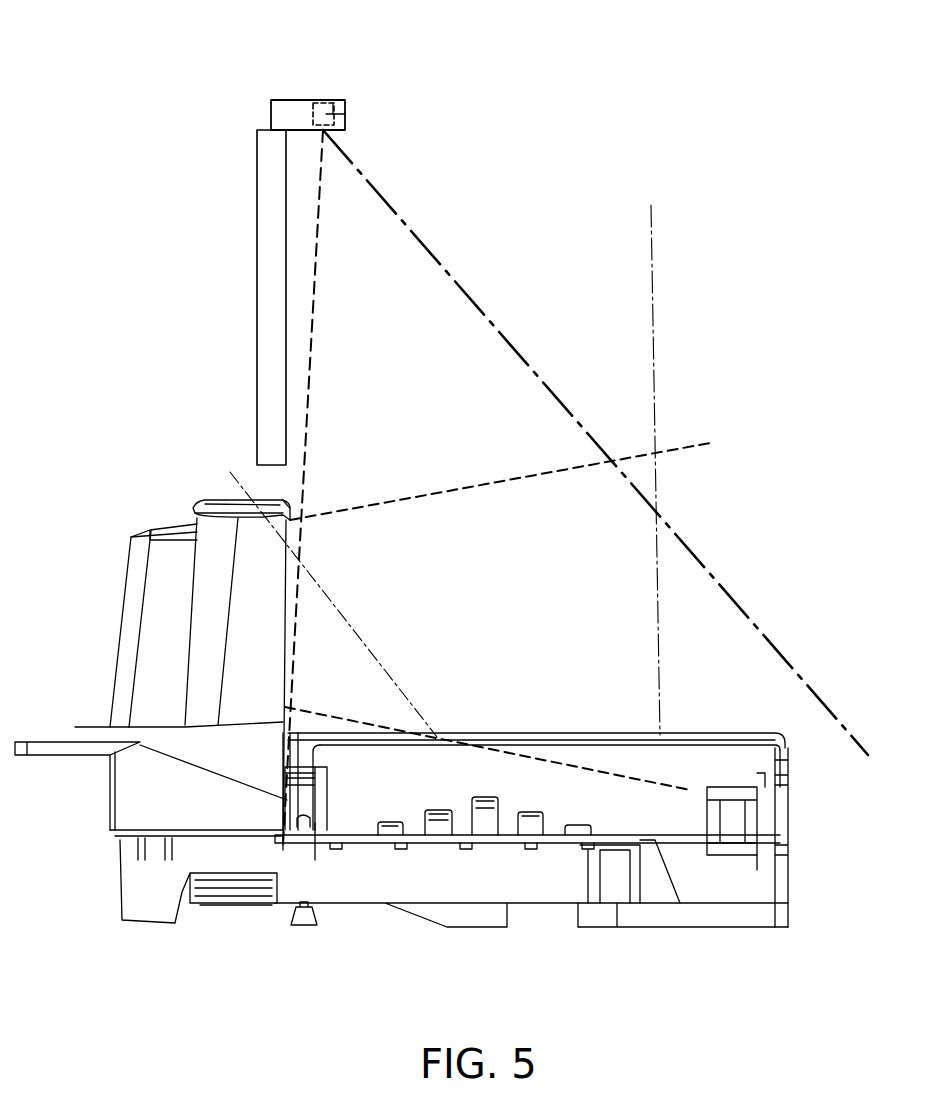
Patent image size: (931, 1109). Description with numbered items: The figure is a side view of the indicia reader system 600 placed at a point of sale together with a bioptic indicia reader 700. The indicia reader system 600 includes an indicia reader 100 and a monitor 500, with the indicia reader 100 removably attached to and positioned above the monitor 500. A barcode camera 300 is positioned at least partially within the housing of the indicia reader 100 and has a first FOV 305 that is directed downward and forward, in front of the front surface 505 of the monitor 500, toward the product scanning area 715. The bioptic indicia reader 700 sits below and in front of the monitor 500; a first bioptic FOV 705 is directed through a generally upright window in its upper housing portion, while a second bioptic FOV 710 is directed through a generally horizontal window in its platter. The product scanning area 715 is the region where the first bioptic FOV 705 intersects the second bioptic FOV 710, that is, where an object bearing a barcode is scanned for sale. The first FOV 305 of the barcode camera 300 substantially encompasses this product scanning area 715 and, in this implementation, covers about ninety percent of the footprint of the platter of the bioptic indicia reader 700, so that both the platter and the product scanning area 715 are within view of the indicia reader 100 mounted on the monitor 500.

The indicia reader system 600 is at (172, 48).
The indicia reader 100 is at (304, 90).
The barcode camera 300 is at (333, 117).
The first FOV 305 is at (472, 270).
The monitor 500 is at (243, 297).
The front surface 505 is at (288, 290).
The bioptic indicia reader 700 is at (98, 602).
The first bioptic FOV 705 is at (436, 478).
The second bioptic FOV 710 is at (670, 387).
The product scanning area 715 is at (537, 620).